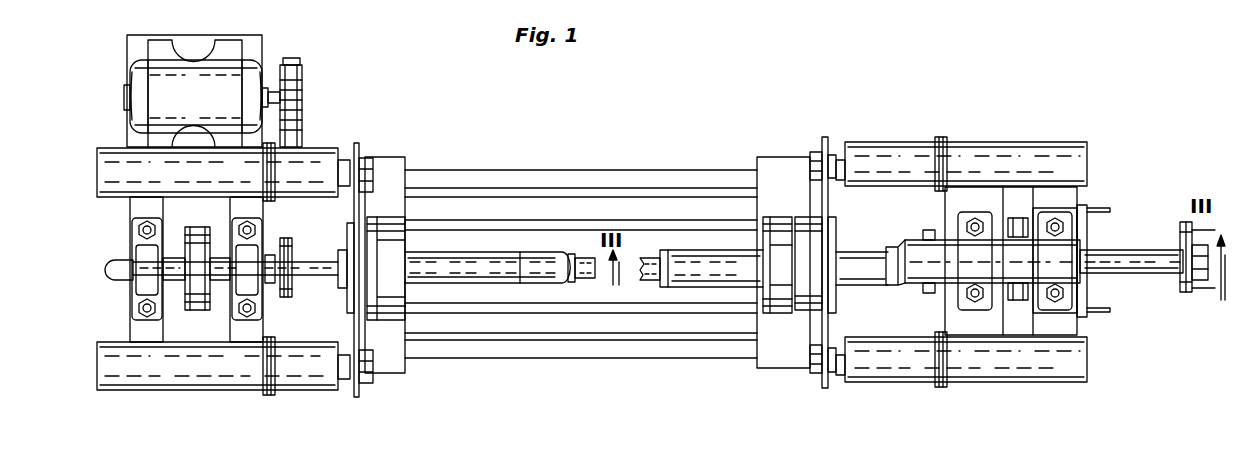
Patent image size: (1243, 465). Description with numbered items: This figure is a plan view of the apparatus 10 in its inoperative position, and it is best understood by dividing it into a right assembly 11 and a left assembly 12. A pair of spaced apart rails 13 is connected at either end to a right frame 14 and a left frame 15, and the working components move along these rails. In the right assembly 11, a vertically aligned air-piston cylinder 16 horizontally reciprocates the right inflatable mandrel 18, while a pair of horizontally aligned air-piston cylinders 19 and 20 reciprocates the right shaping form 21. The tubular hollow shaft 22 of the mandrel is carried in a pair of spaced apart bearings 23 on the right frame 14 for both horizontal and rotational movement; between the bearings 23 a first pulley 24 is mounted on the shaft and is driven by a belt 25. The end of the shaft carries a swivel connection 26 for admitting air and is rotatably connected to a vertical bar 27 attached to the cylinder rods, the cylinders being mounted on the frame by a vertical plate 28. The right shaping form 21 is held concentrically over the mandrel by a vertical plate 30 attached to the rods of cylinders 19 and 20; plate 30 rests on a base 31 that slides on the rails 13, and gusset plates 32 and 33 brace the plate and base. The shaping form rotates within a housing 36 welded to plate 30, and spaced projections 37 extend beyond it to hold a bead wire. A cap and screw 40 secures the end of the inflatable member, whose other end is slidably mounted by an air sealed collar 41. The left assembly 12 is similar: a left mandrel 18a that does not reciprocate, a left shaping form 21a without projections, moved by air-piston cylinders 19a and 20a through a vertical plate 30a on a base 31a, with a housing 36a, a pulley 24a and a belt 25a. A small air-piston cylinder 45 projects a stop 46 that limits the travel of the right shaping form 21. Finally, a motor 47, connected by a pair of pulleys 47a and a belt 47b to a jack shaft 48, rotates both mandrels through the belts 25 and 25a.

The apparatus 10 is at (581, 254).
The right assembly 11 is at (1045, 221).
The left assembly 12 is at (253, 76).
The rails 13 is at (610, 190).
The right frame 14 is at (1065, 325).
The left frame 15 is at (132, 333).
The air-piston cylinder 16 is at (945, 275).
The right inflatable mandrel 18 is at (701, 307).
The left mandrel 18a is at (500, 290).
The air-piston cylinder 19 is at (1030, 155).
The air-piston cylinder 19a is at (328, 158).
The air-piston cylinder 20 is at (1027, 368).
The air-piston cylinder 20a is at (297, 370).
The right shaping form 21 is at (782, 305).
The left shaping form 21a is at (395, 290).
The tubular hollow shaft 22 is at (1110, 262).
The bearings 23 is at (1040, 300).
The first pulley 24 is at (1030, 213).
The pulley 24a is at (215, 300).
The belt 25 is at (1017, 218).
The belt 25a is at (200, 230).
The swivel connection 26 is at (1200, 280).
The vertical bar 27 is at (1185, 295).
The vertical plate 28 is at (1085, 228).
The vertical plate 30 is at (825, 145).
The vertical plate 30a is at (360, 385).
The base 31 is at (785, 363).
The base 31a is at (392, 362).
The gusset plate 32 is at (961, 168).
The gusset plate 33 is at (961, 373).
The housing 36 is at (807, 222).
The housing 36a is at (345, 308).
The projections 37 is at (760, 215).
The cap and screw 40 is at (674, 255).
The air sealed collar 41 is at (895, 280).
The small air-piston cylinder 45 is at (308, 253).
The stop 46 is at (590, 268).
The motor 47 is at (228, 65).
The pulleys 47a is at (301, 82).
The belt 47b is at (290, 58).
The jack shaft 48 is at (650, 278).